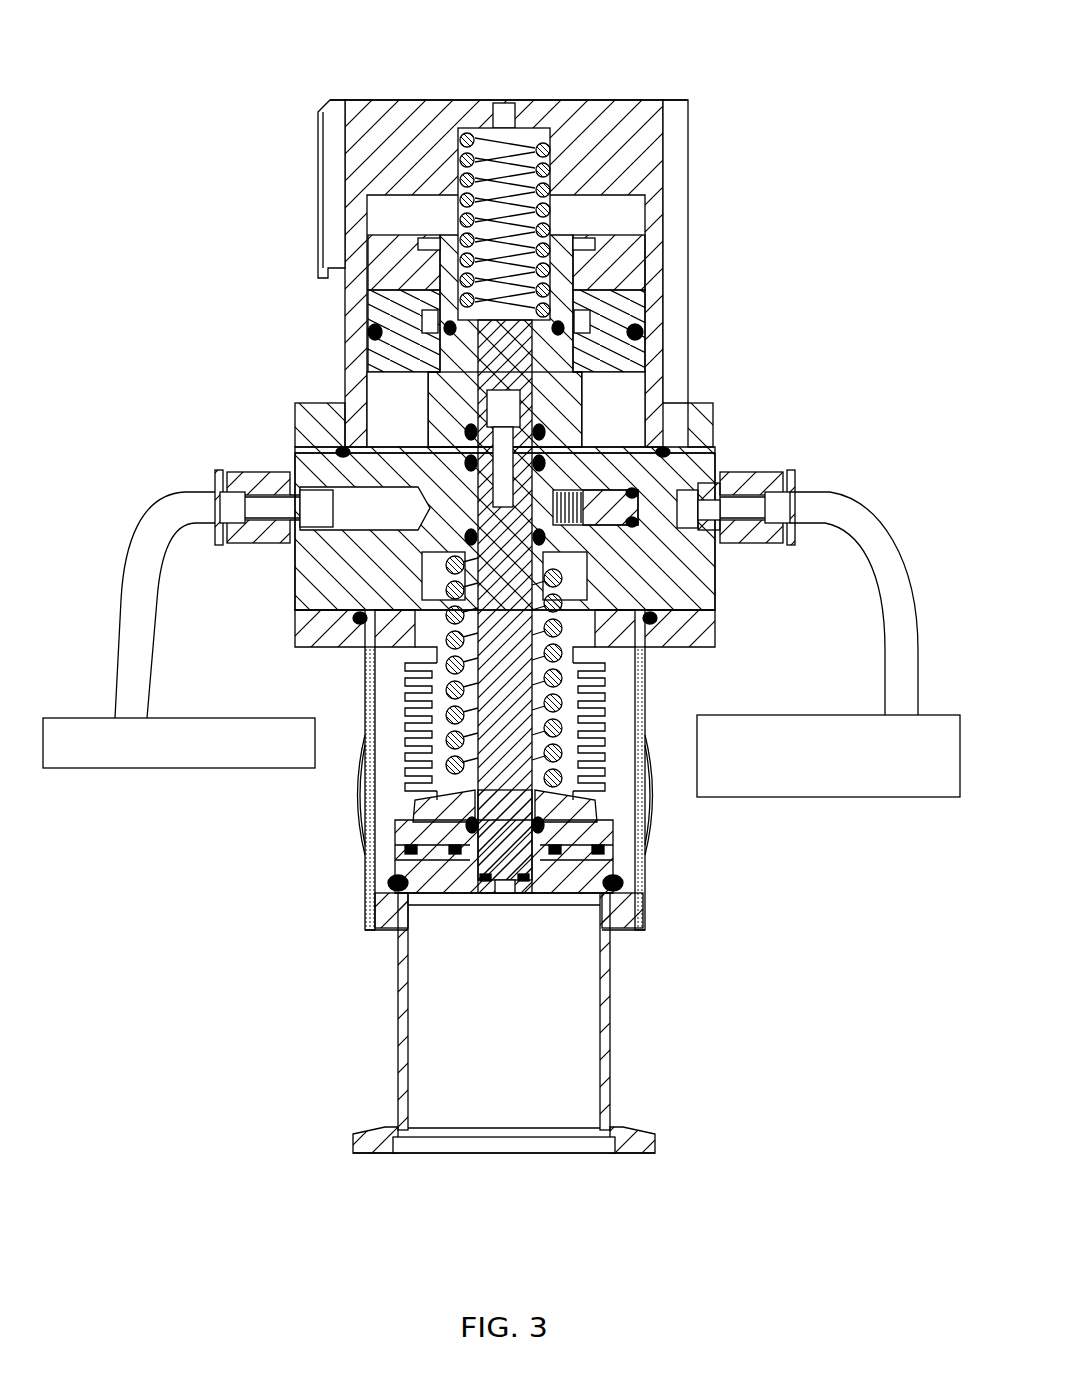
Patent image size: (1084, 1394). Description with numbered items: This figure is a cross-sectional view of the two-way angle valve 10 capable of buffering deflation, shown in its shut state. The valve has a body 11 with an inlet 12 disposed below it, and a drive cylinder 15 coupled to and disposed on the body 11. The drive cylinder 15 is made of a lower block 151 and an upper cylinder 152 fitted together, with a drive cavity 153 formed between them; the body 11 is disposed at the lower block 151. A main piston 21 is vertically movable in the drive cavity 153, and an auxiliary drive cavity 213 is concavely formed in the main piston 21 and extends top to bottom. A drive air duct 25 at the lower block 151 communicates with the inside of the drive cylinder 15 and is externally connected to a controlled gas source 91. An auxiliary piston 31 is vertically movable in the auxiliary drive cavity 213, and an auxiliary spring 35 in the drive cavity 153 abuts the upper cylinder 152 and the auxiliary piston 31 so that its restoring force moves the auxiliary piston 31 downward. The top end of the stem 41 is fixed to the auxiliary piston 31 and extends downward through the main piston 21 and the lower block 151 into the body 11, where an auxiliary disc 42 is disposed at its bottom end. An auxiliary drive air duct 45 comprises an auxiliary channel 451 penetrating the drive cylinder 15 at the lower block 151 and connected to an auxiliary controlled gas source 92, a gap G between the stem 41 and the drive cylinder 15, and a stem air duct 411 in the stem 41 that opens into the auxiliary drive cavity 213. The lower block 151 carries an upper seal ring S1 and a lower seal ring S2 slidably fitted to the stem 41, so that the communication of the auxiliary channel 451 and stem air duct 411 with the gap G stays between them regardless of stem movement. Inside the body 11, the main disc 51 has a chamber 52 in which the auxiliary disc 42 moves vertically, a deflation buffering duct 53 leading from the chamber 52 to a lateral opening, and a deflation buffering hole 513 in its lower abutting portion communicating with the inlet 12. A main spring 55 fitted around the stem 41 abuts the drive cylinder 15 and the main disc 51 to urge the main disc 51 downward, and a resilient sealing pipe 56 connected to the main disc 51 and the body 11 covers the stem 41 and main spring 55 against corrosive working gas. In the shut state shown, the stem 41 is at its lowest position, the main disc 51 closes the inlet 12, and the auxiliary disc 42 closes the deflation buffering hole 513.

The two-way angle valve 10 is at (745, 92).
The body 11 is at (355, 899).
The inlet 12 is at (545, 1155).
The drive cylinder 15 is at (905, 387).
The lower block 151 is at (713, 462).
The upper cylinder 152 is at (713, 423).
The drive cavity 153 is at (378, 412).
The main piston 21 is at (647, 297).
The auxiliary drive cavity 213 is at (453, 390).
The drive air duct 25 is at (365, 527).
The auxiliary piston 31 is at (453, 365).
The auxiliary spring 35 is at (457, 218).
The stem 41 is at (637, 538).
The stem air duct 411 is at (582, 430).
The auxiliary disc 42 is at (535, 882).
The auxiliary drive air duct 45 is at (905, 278).
The auxiliary channel 451 is at (560, 478).
The main disc 51 is at (613, 847).
The deflation buffering hole 513 is at (503, 893).
The chamber 52 is at (535, 860).
The deflation buffering duct 53 is at (393, 863).
The main spring 55 is at (413, 645).
The resilient sealing pipe 56 is at (407, 780).
The controlled gas source 91 is at (80, 770).
The auxiliary controlled gas source 92 is at (852, 800).
The gap G is at (600, 447).
The upper seal ring S1 is at (413, 443).
The lower seal ring S2 is at (422, 552).